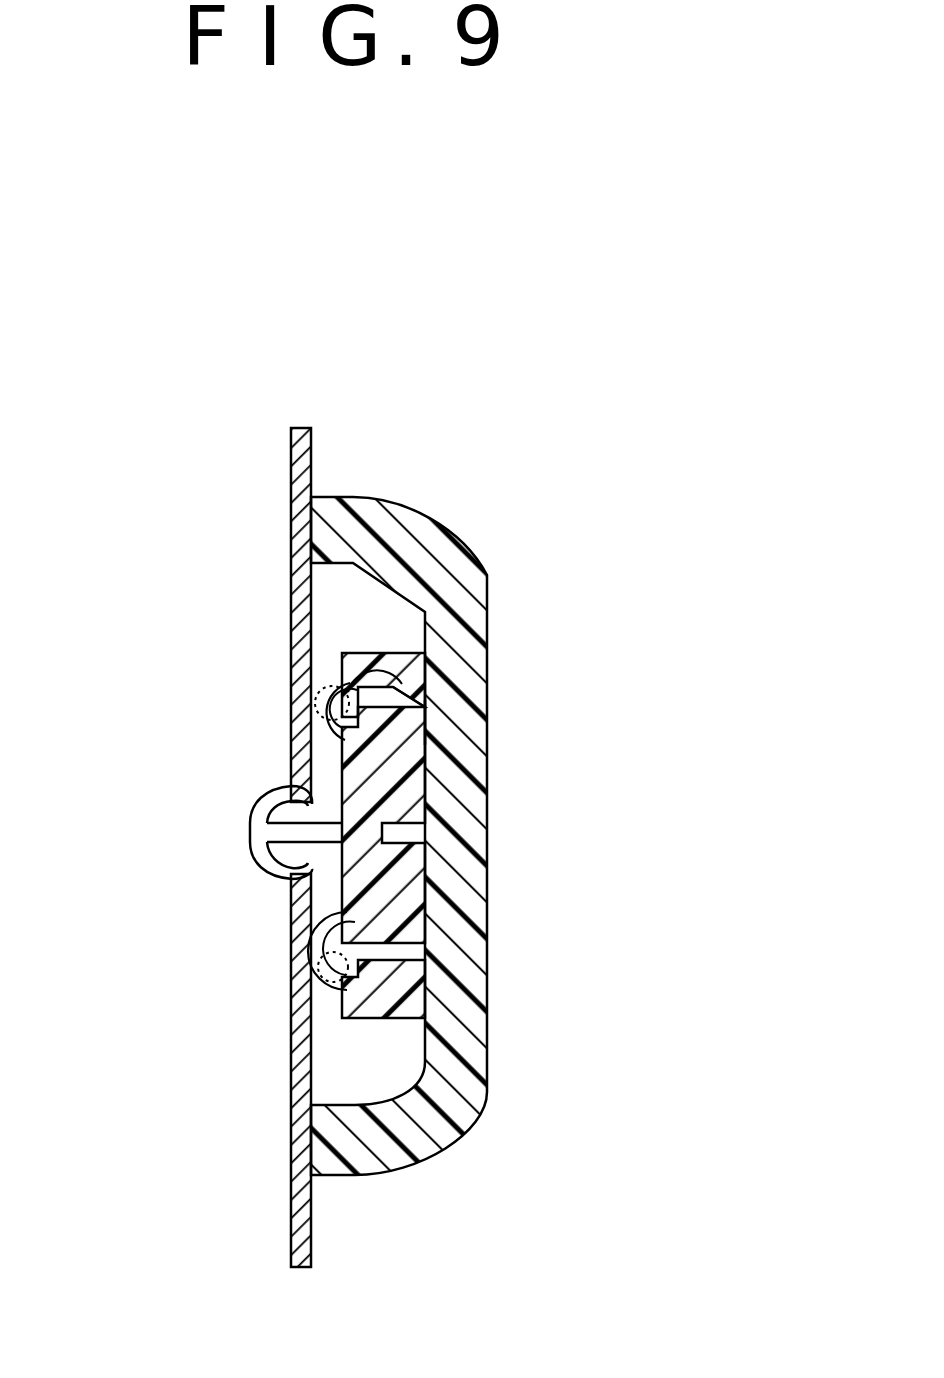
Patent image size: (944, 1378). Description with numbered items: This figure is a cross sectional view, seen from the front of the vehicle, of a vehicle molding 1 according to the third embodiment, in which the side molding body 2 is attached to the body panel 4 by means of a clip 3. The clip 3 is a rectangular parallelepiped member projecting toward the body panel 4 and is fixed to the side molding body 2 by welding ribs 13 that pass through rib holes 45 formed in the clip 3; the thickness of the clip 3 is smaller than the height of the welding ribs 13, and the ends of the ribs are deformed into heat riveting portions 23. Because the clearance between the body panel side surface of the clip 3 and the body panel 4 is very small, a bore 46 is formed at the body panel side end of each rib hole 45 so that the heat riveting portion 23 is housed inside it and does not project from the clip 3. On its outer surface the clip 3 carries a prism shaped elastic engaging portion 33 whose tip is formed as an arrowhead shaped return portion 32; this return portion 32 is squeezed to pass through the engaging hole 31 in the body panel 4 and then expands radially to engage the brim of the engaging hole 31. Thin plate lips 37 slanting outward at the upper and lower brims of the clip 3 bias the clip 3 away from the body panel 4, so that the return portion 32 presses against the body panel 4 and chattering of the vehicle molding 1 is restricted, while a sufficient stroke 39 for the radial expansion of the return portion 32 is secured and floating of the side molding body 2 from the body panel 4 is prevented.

The vehicle molding 1 is at (580, 400).
The side molding body 2 is at (498, 568).
The clip 3 is at (348, 632).
The body panel 4 is at (293, 497).
The welding rib 13 is at (385, 692).
The heat riveting portion 23 is at (365, 655).
The engaging hole 31 is at (266, 814).
The return portion 32 is at (278, 870).
The elastic engaging portion 33 is at (284, 836).
The lip 37 is at (325, 682).
The stroke 39 is at (340, 914).
The rib hole 45 is at (428, 702).
The bore 46 is at (342, 976).